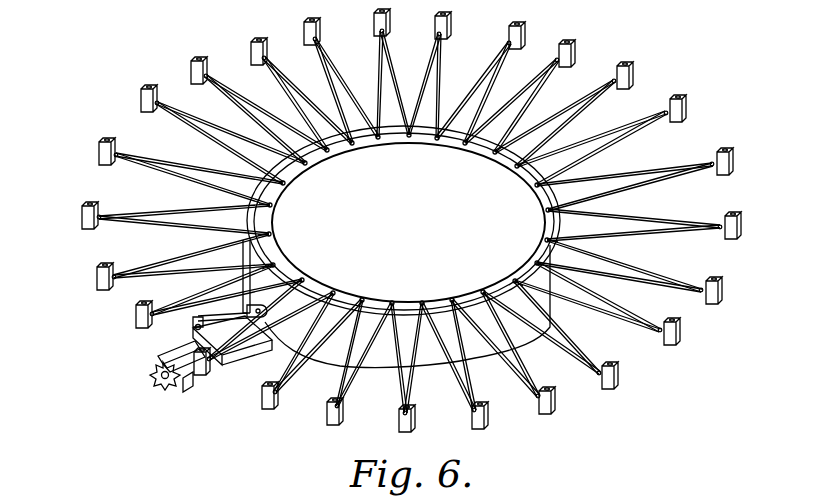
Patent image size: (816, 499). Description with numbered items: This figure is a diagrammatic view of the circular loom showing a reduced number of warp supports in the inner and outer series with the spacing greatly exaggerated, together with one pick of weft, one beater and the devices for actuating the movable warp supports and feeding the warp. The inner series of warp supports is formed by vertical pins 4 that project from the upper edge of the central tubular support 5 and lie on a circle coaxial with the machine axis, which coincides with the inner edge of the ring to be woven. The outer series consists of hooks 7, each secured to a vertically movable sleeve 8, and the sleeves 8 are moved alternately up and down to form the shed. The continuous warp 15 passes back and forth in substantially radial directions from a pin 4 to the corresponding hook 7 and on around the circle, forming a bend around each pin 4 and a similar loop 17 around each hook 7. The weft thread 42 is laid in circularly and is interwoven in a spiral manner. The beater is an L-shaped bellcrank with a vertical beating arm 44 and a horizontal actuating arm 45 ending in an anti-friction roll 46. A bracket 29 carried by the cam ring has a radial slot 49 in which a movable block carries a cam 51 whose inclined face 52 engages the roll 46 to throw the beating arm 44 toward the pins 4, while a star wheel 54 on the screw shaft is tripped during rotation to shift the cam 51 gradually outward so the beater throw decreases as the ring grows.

The warp supports or pins 4 is at (407, 137).
The tubular support 5 is at (551, 305).
The hooks 7 is at (324, 37).
The sleeve 8 is at (310, 47).
The warp 15 is at (261, 128).
The loop or bend 17 is at (268, 62).
The bracket 29 is at (165, 352).
The weft thread 42 is at (277, 263).
The beating arm 44 is at (245, 255).
The actuating arm 45 is at (235, 312).
The anti-friction roll 46 is at (196, 325).
The radial slot 49 is at (205, 378).
The cam 51 is at (200, 328).
The inclined face 52 is at (225, 340).
The star wheel 54 is at (161, 384).